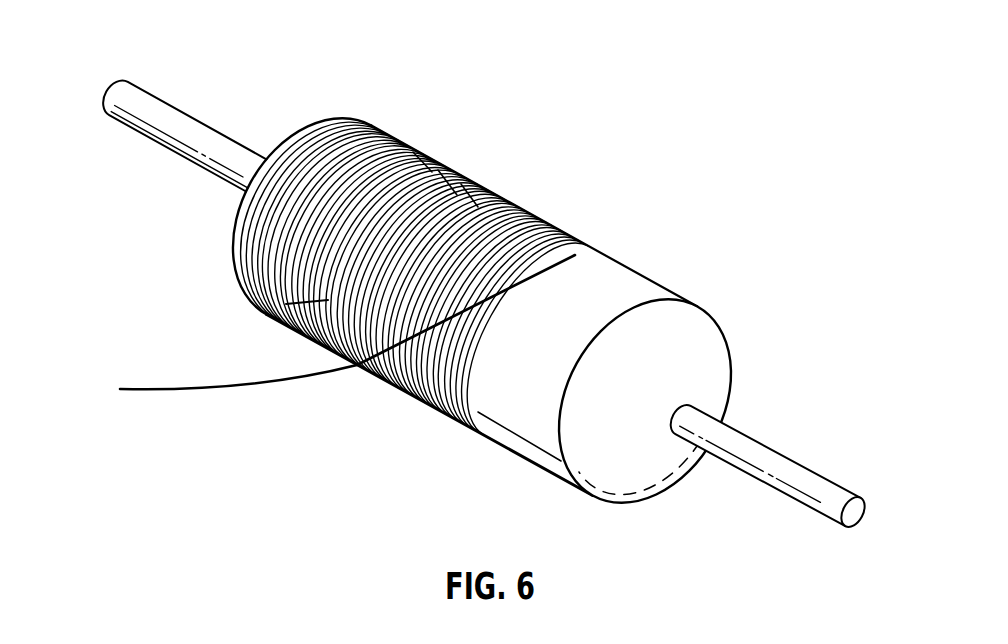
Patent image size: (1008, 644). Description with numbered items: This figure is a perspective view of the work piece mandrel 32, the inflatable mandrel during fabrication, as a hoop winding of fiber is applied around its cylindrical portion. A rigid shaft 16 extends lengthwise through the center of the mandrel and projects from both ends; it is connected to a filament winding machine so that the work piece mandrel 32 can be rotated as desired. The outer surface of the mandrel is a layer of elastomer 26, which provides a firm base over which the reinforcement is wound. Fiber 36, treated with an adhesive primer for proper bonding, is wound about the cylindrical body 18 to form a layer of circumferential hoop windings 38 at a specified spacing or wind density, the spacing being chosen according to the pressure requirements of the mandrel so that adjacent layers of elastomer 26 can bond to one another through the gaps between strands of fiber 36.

The rigid shaft 16 is at (176, 115).
The cylindrical body 18 is at (518, 437).
The layer of elastomer 26 is at (634, 455).
The work piece mandrel 32 is at (660, 262).
The fiber 36 is at (400, 131).
The circumferential hoop windings 38 is at (478, 178).